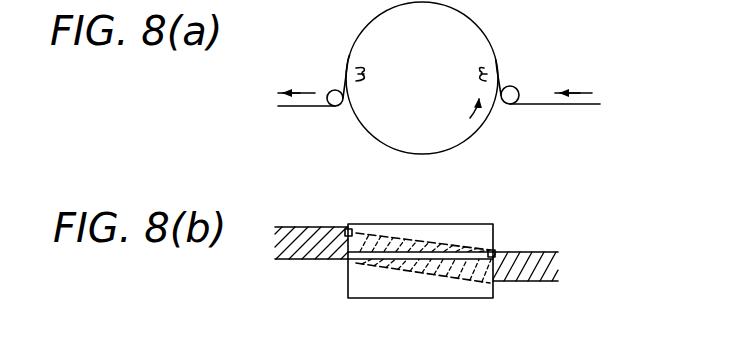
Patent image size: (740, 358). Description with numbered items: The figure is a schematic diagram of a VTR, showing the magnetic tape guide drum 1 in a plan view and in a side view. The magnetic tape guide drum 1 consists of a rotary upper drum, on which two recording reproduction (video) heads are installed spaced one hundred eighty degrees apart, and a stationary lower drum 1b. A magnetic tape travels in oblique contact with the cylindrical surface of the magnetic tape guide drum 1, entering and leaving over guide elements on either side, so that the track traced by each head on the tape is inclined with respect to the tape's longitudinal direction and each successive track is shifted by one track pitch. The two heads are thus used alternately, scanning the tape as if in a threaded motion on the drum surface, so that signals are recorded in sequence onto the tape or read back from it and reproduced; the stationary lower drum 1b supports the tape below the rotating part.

The magnetic tape guide drum 1 is at (437, 222).
The stationary lower drum 1b is at (352, 285).